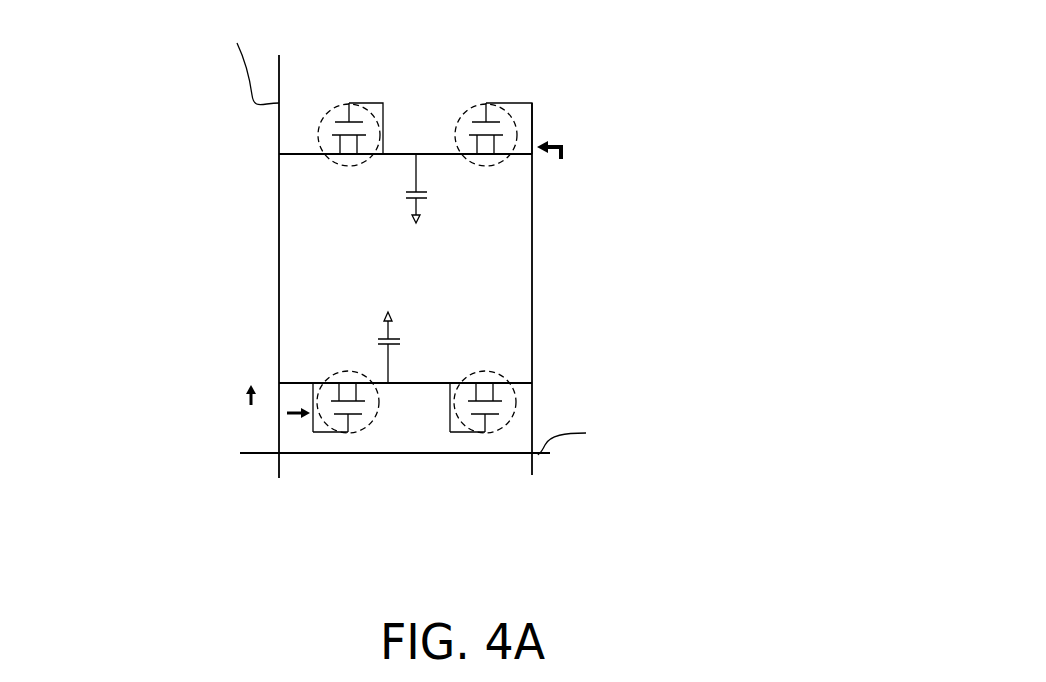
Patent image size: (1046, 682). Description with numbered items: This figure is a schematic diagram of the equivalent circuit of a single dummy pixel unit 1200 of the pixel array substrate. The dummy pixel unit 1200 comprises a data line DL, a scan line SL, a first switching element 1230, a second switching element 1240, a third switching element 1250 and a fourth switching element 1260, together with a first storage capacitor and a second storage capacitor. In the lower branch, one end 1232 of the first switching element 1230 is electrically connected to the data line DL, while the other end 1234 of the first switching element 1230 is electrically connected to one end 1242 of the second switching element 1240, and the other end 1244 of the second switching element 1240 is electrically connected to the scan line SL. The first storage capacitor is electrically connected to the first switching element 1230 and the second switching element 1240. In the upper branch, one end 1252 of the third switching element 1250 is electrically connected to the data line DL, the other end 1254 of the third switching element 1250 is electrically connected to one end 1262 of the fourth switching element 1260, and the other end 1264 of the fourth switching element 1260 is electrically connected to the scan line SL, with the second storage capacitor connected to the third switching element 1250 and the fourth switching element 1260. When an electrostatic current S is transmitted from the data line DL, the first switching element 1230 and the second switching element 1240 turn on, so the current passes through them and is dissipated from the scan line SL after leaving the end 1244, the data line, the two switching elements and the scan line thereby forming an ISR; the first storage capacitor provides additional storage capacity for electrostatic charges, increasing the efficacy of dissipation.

The dummy pixel unit 1200 is at (441, 296).
The first switching element 1230 is at (333, 397).
The end of the first switching element 1232 is at (297, 381).
The other end of the first switching element 1234 is at (362, 383).
The second switching element 1240 is at (485, 415).
The end of the second switching element 1242 is at (465, 382).
The other end of the second switching element 1244 is at (520, 381).
The third switching element 1250 is at (300, 133).
The end of the third switching element 1252 is at (332, 158).
The other end of the third switching element 1254 is at (378, 157).
The fourth switching element 1260 is at (507, 143).
The end of the fourth switching element 1262 is at (460, 157).
The other end of the fourth switching element 1264 is at (503, 103).